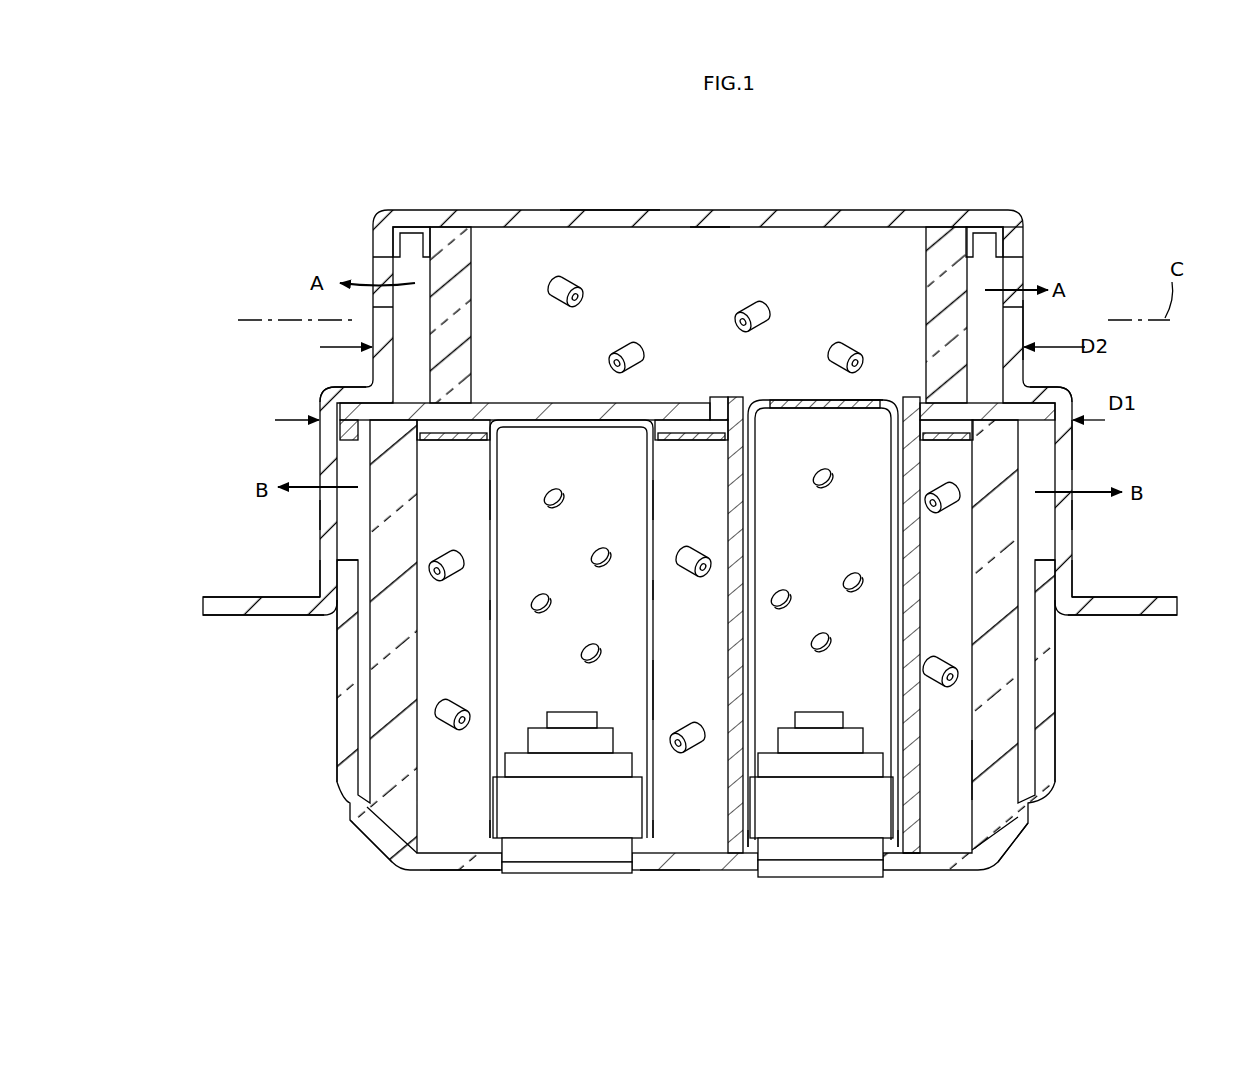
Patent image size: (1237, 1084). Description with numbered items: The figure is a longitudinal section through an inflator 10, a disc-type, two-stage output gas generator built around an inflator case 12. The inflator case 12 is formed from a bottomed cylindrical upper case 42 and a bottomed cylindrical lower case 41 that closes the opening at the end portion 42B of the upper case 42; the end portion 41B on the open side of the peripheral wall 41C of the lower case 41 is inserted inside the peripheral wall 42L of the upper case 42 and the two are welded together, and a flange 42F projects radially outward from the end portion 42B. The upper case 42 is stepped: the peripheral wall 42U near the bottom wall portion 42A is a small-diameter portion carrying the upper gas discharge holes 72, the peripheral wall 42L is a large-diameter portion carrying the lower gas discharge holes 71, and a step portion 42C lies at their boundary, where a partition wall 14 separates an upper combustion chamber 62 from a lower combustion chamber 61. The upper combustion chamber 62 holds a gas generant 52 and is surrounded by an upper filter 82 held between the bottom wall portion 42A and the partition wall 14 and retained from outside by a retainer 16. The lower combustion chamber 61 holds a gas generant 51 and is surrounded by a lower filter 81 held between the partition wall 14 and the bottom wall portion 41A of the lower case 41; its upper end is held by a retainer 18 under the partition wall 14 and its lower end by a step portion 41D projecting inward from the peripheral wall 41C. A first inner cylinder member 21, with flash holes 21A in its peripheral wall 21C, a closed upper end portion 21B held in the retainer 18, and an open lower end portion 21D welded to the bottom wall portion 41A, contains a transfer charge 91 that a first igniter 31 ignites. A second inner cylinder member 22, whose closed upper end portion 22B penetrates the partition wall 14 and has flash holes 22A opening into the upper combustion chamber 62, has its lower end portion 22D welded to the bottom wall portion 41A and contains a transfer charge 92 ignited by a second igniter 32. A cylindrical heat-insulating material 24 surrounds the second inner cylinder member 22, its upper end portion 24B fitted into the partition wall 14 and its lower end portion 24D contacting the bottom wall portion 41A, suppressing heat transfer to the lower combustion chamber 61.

The inflator 10 is at (318, 193).
The inflator case 12 is at (318, 690).
The partition wall 14 is at (556, 400).
The retainer 16 is at (995, 230).
The retainer 18 is at (690, 440).
The first inner cylinder member 21 is at (488, 662).
The flash holes 21A is at (488, 500).
The upper end portion 21B is at (593, 428).
The peripheral wall 21C is at (658, 685).
The lower end portion 21D is at (660, 862).
The second inner cylinder member 22 is at (760, 398).
The flash holes 22A is at (805, 400).
The upper end portion 22B is at (880, 400).
The lower end portion 22D is at (918, 862).
The heat-insulating material 24 is at (922, 600).
The upper end portion 24B is at (712, 400).
The lower end portion 24D is at (905, 862).
The first igniter 31 is at (555, 712).
The second igniter 32 is at (815, 712).
The lower case 41 is at (745, 872).
The bottom wall portion 41A is at (645, 872).
The end portion 41B is at (345, 562).
The peripheral wall 41C is at (1057, 700).
The step portion 41D is at (355, 828).
The upper case 42 is at (856, 208).
The bottom wall portion 42A is at (620, 210).
The end portion 42B is at (333, 618).
The step portion 42C is at (326, 392).
The flange 42F is at (230, 600).
The peripheral wall 42L is at (1075, 440).
The peripheral wall 42U is at (1025, 330).
The gas generant 51 is at (455, 735).
The gas generant 52 is at (620, 345).
The lower combustion chamber 61 is at (465, 855).
The upper combustion chamber 62 is at (710, 260).
The lower gas discharge holes 71 is at (325, 512).
The upper gas discharge holes 72 is at (383, 262).
The lower filter 81 is at (960, 765).
The upper filter 82 is at (473, 318).
The transfer charge 91 is at (552, 606).
The transfer charge 92 is at (783, 585).